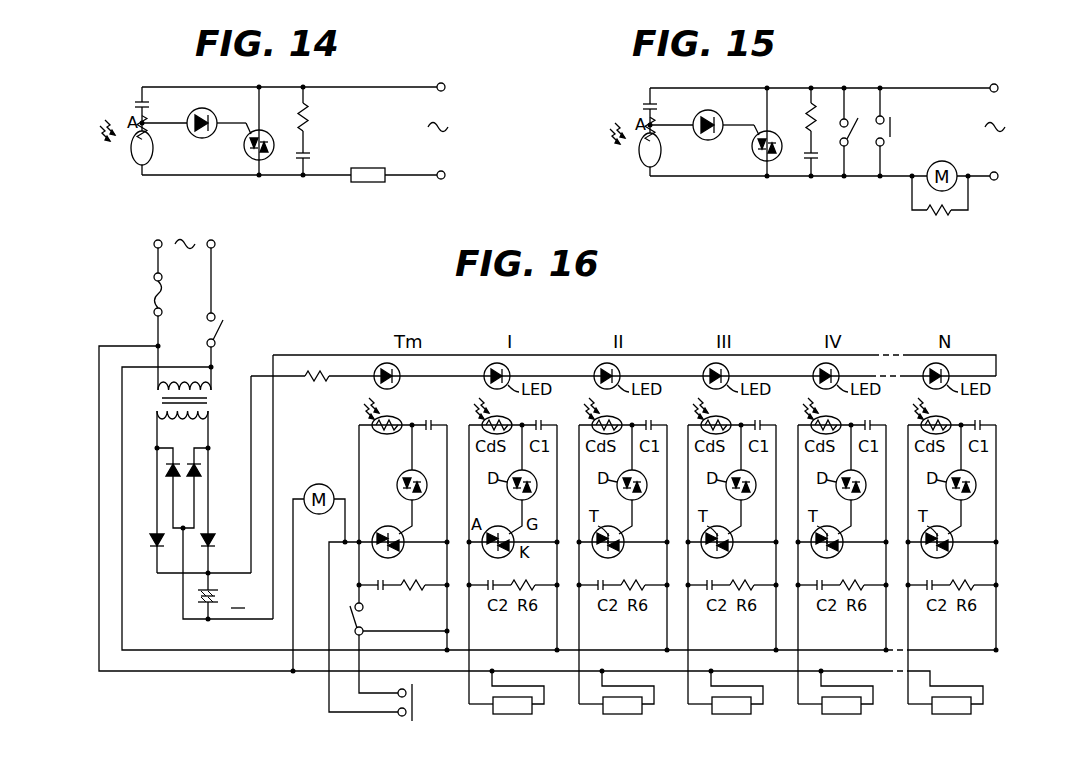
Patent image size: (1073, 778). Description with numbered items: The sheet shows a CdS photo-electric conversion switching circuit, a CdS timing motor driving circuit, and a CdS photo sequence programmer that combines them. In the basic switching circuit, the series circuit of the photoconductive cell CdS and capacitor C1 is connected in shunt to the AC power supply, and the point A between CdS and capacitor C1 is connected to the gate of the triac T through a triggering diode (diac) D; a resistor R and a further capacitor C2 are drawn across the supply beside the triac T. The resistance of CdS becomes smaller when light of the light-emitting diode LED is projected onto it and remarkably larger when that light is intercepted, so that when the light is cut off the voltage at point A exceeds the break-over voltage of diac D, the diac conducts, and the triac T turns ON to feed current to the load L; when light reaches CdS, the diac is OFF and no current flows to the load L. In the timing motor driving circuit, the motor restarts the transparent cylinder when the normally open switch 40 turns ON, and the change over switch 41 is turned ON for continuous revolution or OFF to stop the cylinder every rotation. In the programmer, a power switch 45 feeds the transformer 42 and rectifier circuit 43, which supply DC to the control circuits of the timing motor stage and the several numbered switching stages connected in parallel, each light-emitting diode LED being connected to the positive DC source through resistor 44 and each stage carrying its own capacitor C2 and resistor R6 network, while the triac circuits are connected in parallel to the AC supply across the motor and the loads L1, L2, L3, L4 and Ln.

In FIG. 15, the normally open switch 40 is at (892, 127).
In FIG. 16, the normally open switch 40 is at (415, 697).
In FIG. 15, the change over switch 41 is at (850, 128).
In FIG. 16, the change over switch 41 is at (351, 618).
In FIG. 16, the transformer 42 is at (212, 402).
In FIG. 16, the rectifier circuit 43 is at (211, 534).
In FIG. 16, the resistor 44 is at (318, 381).
In FIG. 16, the power switch 45 is at (226, 330).
In FIG. 14, the capacitor C1 is at (135, 101).
In FIG. 15, the capacitor C1 is at (649, 102).
In FIG. 16, the capacitor C1 is at (429, 438).
In FIG. 14, the capacitor C2 is at (313, 158).
In FIG. 15, the capacitor C2 is at (818, 157).
In FIG. 16, the capacitor C2 is at (387, 597).
In FIG. 14, the CdS photoconductive cell CdS is at (130, 165).
In FIG. 15, the CdS photoconductive cell CdS is at (641, 167).
In FIG. 16, the CdS photoconductive cell CdS is at (383, 436).
In FIG. 14, the triggering diode (diac) D is at (203, 138).
In FIG. 15, the triggering diode (diac) D is at (711, 138).
In FIG. 16, the triggering diode (diac) D is at (397, 482).
In FIG. 14, the triac T is at (266, 160).
In FIG. 15, the triac T is at (774, 160).
In FIG. 16, the triac T is at (609, 536).
In FIG. 14, the resistor R is at (312, 117).
In FIG. 15, the resistor R is at (816, 120).
In FIG. 16, the resistor R6 is at (414, 597).
In FIG. 14, the load L is at (372, 168).
In FIG. 16, the light-emitting diode LED is at (398, 385).
In FIG. 16, the load L1 is at (507, 714).
In FIG. 16, the load L2 is at (617, 714).
In FIG. 16, the load L3 is at (726, 714).
In FIG. 16, the load L4 is at (836, 714).
In FIG. 16, the load Ln is at (950, 714).